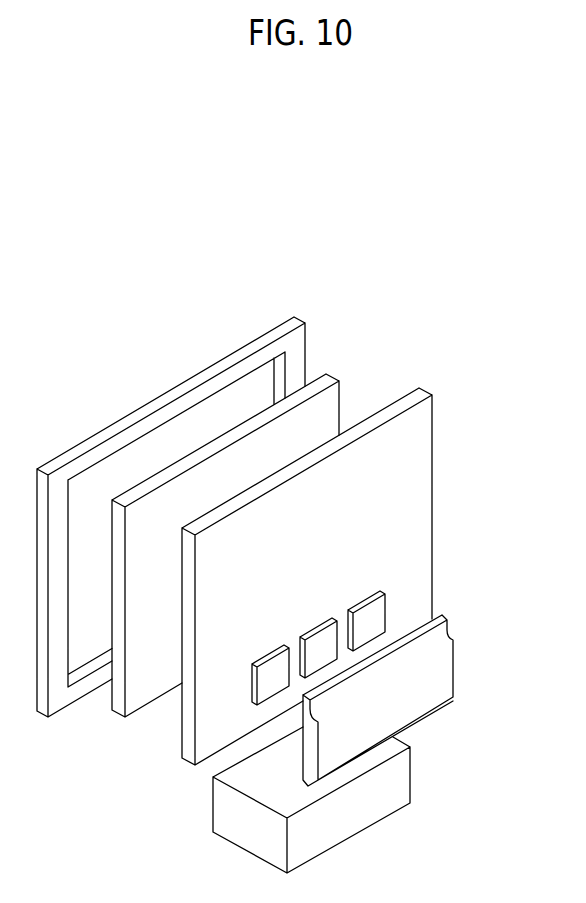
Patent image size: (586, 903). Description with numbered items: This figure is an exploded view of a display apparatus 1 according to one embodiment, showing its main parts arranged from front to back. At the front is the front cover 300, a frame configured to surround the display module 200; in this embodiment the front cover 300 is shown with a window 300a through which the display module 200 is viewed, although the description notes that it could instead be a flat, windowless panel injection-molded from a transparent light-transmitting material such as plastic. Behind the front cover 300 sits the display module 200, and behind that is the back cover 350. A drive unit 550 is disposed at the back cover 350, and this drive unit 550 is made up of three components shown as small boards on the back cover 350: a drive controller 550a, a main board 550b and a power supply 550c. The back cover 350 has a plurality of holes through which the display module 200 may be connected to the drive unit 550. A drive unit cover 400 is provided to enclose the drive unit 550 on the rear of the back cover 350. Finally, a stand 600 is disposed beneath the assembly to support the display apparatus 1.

The display apparatus 1 is at (463, 273).
The front cover 300 is at (182, 488).
The window 300a is at (212, 417).
The display module 200 is at (330, 377).
The back cover 350 is at (423, 432).
The drive unit 550 is at (399, 606).
The drive controller 550a is at (270, 657).
The main board 550b is at (323, 618).
The power supply 550c is at (372, 596).
The drive unit cover 400 is at (443, 672).
The stand 600 is at (397, 780).